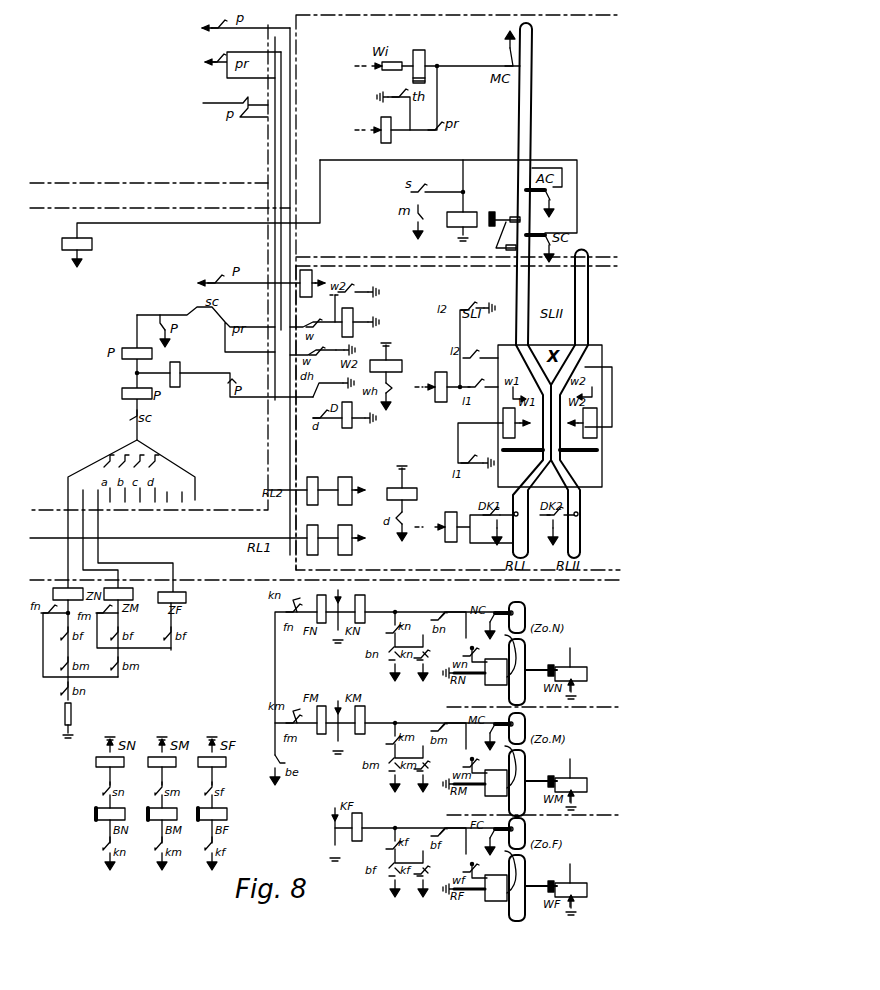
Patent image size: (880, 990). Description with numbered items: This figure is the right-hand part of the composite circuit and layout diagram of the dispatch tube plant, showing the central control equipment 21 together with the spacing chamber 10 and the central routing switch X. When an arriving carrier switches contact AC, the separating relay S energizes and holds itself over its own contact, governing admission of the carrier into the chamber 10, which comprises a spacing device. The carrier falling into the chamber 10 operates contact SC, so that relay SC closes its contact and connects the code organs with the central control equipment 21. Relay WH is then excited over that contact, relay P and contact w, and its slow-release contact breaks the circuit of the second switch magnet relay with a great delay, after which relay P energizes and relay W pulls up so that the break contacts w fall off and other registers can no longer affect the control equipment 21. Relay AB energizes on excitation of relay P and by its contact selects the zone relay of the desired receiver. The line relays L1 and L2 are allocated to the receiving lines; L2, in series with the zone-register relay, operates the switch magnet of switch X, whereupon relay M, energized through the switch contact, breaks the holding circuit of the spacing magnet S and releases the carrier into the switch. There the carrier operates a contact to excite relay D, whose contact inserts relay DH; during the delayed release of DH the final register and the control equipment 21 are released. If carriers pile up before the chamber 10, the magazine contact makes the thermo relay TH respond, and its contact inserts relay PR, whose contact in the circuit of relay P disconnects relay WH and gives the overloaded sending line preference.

The chamber 10 is at (525, 202).
The central control equipment 21 is at (363, 418).
The relay SC is at (191, 213).
The thermo relay TH is at (461, 64).
The relay PR is at (373, 122).
The separating relay S is at (454, 226).
The relay W is at (314, 276).
The relay AB is at (185, 373).
The relay L1 is at (336, 540).
The relay L2 is at (336, 491).
The relay WH is at (360, 321).
The relay DH is at (406, 489).
The relay M is at (428, 381).
The relay D is at (436, 526).